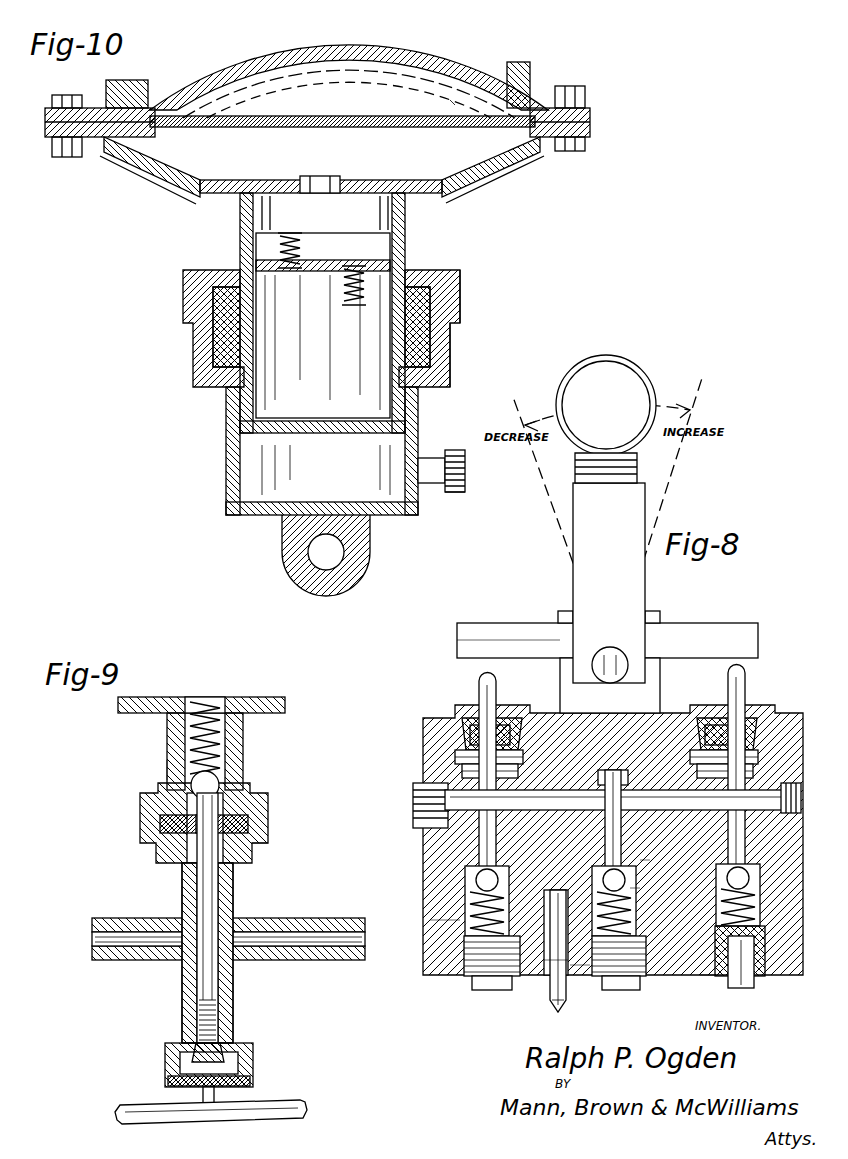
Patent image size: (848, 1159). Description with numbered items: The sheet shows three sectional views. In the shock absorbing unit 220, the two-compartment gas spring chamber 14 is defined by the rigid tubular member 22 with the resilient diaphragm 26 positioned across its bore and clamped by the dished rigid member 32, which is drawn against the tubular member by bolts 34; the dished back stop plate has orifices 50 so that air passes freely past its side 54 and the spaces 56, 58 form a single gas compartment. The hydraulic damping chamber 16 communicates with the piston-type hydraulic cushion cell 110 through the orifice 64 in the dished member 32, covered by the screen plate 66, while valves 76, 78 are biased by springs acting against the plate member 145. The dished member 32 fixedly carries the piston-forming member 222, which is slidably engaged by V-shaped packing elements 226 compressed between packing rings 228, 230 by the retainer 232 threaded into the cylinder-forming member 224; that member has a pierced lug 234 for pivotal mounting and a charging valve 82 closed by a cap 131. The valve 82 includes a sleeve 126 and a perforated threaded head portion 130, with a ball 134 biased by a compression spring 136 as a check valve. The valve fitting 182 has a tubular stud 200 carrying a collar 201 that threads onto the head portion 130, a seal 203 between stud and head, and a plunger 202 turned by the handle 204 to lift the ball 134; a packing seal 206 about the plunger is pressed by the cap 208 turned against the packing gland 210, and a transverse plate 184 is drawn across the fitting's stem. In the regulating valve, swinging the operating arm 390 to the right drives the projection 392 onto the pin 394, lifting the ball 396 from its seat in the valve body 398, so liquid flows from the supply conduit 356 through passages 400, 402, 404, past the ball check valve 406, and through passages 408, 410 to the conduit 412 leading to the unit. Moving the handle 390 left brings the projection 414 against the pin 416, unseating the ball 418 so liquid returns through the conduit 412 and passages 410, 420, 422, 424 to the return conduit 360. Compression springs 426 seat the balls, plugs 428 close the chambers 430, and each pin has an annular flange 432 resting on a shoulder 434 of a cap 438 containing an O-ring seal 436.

In FIG. 10, the two-compartment gas spring chamber 14 is at (104, 86).
In FIG. 10, the hydraulic damping chamber 16 is at (186, 160).
In FIG. 10, the rigid tubular member 22 is at (532, 81).
In FIG. 10, the resilient diaphragm 26 is at (272, 116).
In FIG. 10, the dished rigid member 32 is at (180, 188).
In FIG. 10, the bolts 34 is at (58, 158).
In FIG. 10, the orifices 50 is at (197, 95).
In FIG. 10, the side of dished member 54 is at (358, 52).
In FIG. 10, the space on one side of dished member 56 is at (449, 96).
In FIG. 10, the space on other side of dished member 58 is at (498, 80).
In FIG. 10, the orifice 64 is at (315, 194).
In FIG. 10, the screen plate 66 is at (341, 179).
In FIG. 10, the valve 76 is at (298, 276).
In FIG. 10, the valve 78 is at (347, 308).
In FIG. 10, the valve 82 is at (440, 456).
In FIG. 9, the valve 82 is at (165, 771).
In FIG. 10, the piston-type hydraulic cushion cell 110 is at (190, 366).
In FIG. 10, the cap 131 is at (453, 486).
In FIG. 10, the plate member 145 is at (320, 250).
In FIG. 10, the unit 220 is at (160, 283).
In FIG. 10, the piston-forming member 222 is at (406, 240).
In FIG. 10, the cylinder-forming member 224 is at (226, 406).
In FIG. 10, the packing elements 226 is at (213, 345).
In FIG. 10, the packing ring 228 is at (458, 270).
In FIG. 10, the packing ring 230 is at (452, 355).
In FIG. 10, the retainer 232 is at (462, 278).
In FIG. 10, the pierced lug 234 is at (282, 539).
In FIG. 9, the sleeve 126 is at (167, 742).
In FIG. 9, the screw-threaded head portion 130 is at (268, 805).
In FIG. 9, the ball 134 is at (220, 786).
In FIG. 9, the compression spring 136 is at (225, 742).
In FIG. 9, the valve fitting 182 is at (180, 889).
In FIG. 9, the plate 184 is at (306, 961).
In FIG. 9, the tubular stud 200 is at (236, 878).
In FIG. 9, the collar 201 is at (268, 841).
In FIG. 9, the plunger 202 is at (200, 985).
In FIG. 9, the seal 203 is at (250, 825).
In FIG. 9, the handle 204 is at (272, 1118).
In FIG. 9, the packing seal 206 is at (235, 1043).
In FIG. 9, the cap 208 is at (165, 1068).
In FIG. 9, the packing gland 210 is at (166, 1082).
In FIG. 8, the supply conduit 356 is at (734, 992).
In FIG. 8, the return conduit 360 is at (421, 790).
In FIG. 8, the operating arm 390 is at (641, 496).
In FIG. 8, the projection 392 is at (718, 618).
In FIG. 8, the pin 394 is at (746, 684).
In FIG. 8, the ball 396 is at (708, 976).
In FIG. 8, the valve body 398 is at (790, 716).
In FIG. 8, the passage 400 is at (640, 888).
In FIG. 8, the passage 402 is at (688, 795).
In FIG. 8, the passage 404 is at (604, 832).
In FIG. 8, the ball check valve 406 is at (643, 862).
In FIG. 8, the passage 408 is at (578, 970).
In FIG. 8, the passage 410 is at (548, 975).
In FIG. 8, the conduit 412 is at (548, 1004).
In FIG. 8, the projection 414 is at (523, 631).
In FIG. 8, the pin 416 is at (479, 700).
In FIG. 8, the ball 418 is at (477, 880).
In FIG. 8, the passage 420 is at (540, 965).
In FIG. 8, the passage 422 is at (600, 810).
In FIG. 8, the passage 424 is at (433, 827).
In FIG. 8, the compression springs 426 is at (465, 918).
In FIG. 8, the plugs 428 is at (470, 980).
In FIG. 8, the chambers 430 is at (465, 886).
In FIG. 8, the annular flange 432 is at (462, 771).
In FIG. 8, the shoulders 434 is at (455, 752).
In FIG. 8, the O-ring seals 436 is at (522, 714).
In FIG. 8, the caps 438 is at (512, 705).